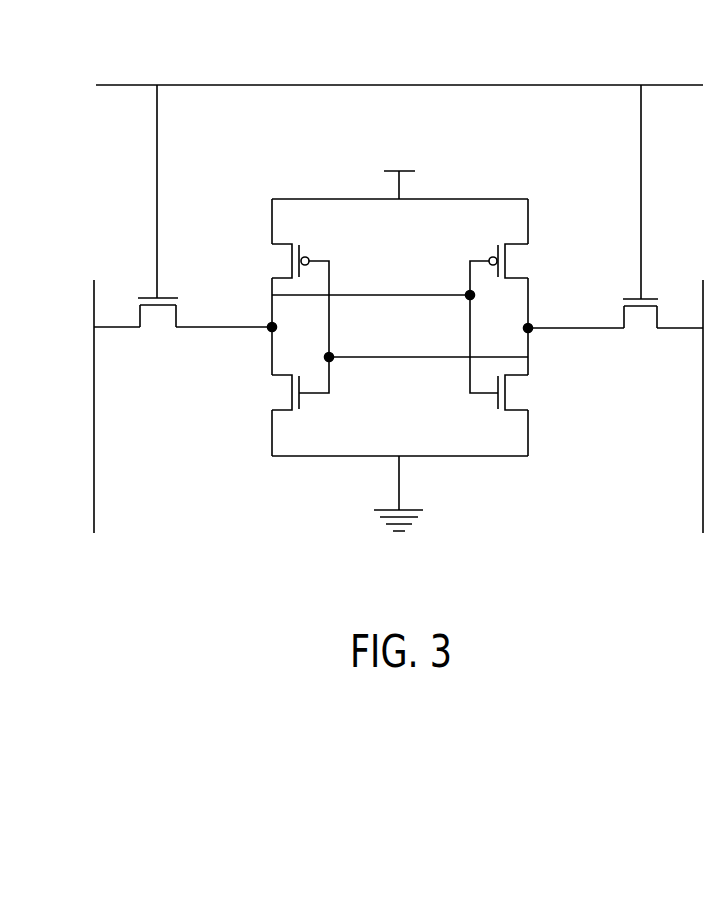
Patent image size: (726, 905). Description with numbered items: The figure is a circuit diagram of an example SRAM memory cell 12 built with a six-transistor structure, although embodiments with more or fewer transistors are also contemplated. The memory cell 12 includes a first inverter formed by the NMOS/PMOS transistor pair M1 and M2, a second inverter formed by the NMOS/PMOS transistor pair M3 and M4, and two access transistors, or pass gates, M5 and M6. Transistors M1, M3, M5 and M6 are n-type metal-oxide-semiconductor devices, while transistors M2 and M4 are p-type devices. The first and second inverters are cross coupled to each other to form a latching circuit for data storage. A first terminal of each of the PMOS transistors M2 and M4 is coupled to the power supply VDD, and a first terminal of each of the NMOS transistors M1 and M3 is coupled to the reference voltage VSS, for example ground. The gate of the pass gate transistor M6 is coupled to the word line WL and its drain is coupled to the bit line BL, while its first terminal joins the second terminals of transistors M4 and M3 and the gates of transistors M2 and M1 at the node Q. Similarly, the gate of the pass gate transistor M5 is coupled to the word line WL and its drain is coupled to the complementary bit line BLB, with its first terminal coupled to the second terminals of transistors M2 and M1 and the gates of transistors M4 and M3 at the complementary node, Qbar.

The memory cell 12 is at (573, 47).
The word line WL is at (130, 85).
The bit line BL is at (706, 425).
The complementary bit line BLB is at (93, 425).
The transistor M1 is at (283, 383).
The transistor M2 is at (283, 300).
The transistor M3 is at (516, 352).
The transistor M4 is at (516, 269).
The pass gate transistor M5 is at (183, 222).
The pass gate transistor M6 is at (615, 222).
The node Q is at (556, 298).
The power supply VDD is at (401, 169).
The reference voltage VSS is at (398, 513).